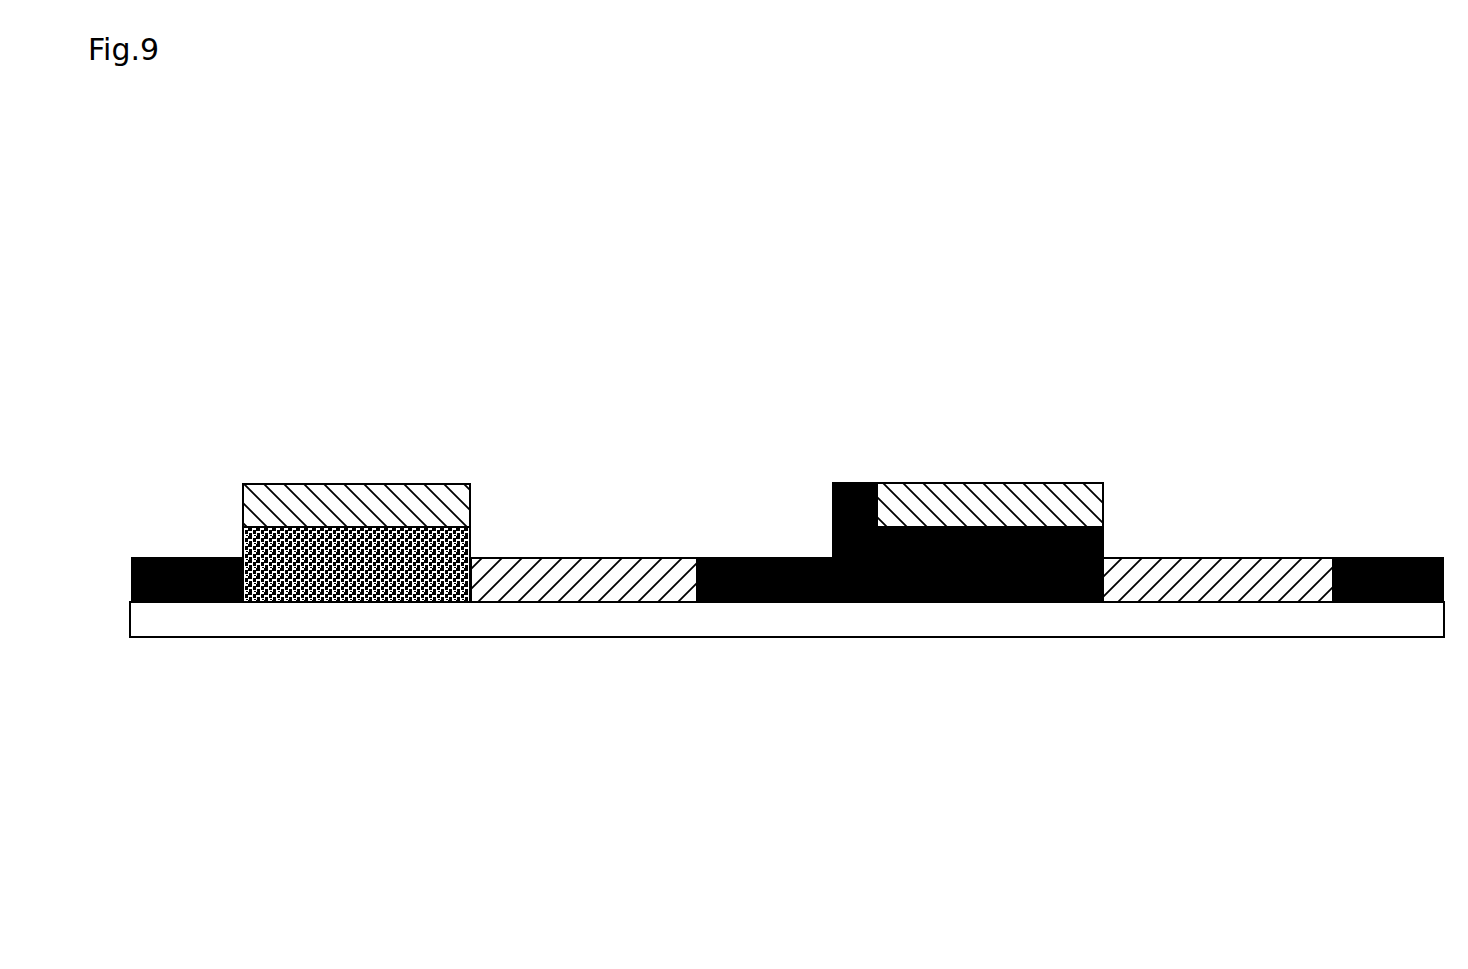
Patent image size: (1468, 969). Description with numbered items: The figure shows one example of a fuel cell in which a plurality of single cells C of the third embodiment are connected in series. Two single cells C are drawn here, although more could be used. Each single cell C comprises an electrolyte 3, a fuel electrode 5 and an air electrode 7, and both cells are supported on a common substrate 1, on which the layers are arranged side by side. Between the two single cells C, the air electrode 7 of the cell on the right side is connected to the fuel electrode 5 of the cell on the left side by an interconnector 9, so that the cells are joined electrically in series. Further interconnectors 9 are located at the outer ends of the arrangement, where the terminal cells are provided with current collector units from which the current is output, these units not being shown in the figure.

The substrate 1 is at (762, 637).
The electrolyte 3 is at (262, 549).
The fuel electrode 5 is at (590, 572).
The air electrode 7 is at (388, 488).
The interconnector 9 is at (168, 578).
The single cell C is at (522, 428).